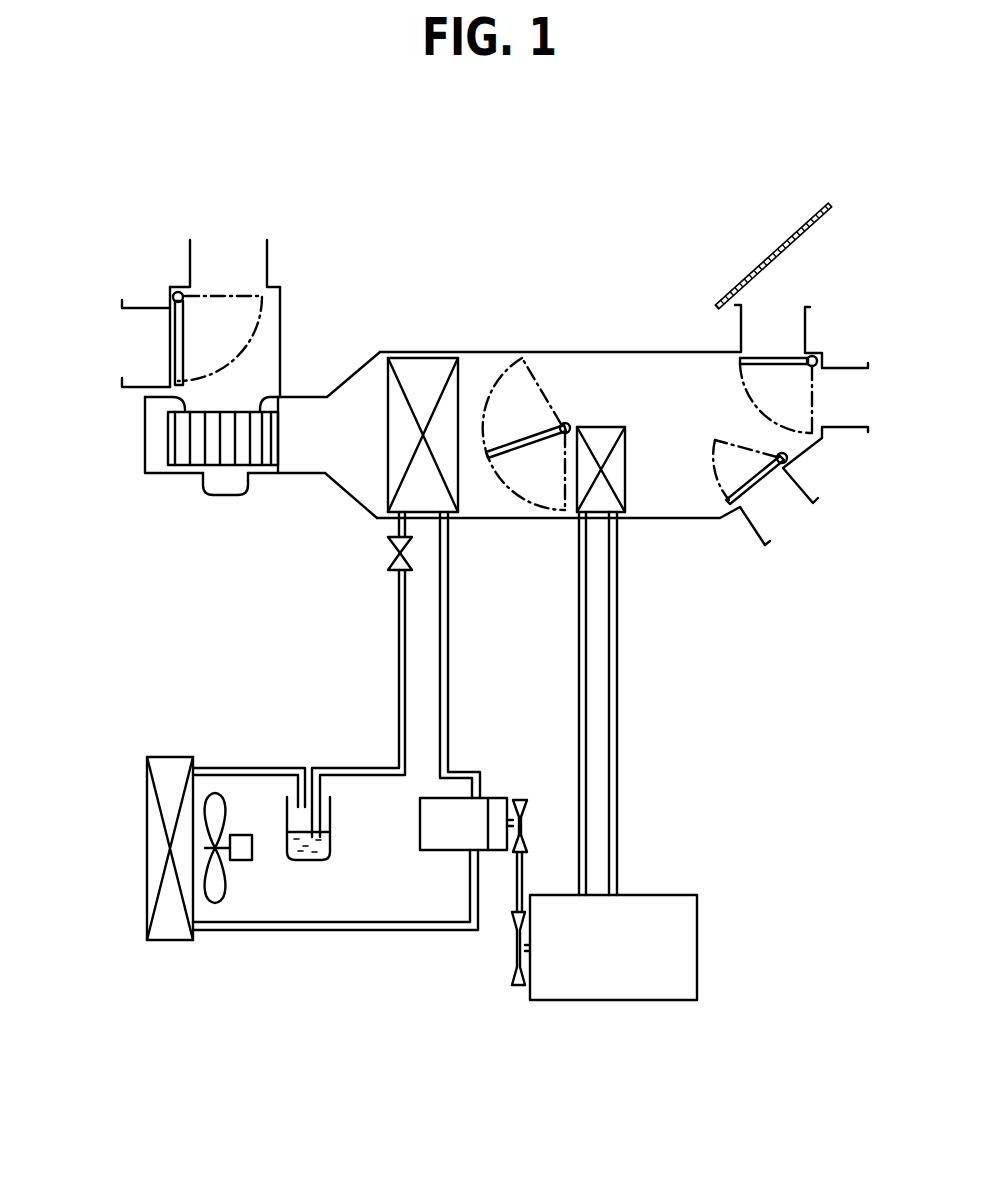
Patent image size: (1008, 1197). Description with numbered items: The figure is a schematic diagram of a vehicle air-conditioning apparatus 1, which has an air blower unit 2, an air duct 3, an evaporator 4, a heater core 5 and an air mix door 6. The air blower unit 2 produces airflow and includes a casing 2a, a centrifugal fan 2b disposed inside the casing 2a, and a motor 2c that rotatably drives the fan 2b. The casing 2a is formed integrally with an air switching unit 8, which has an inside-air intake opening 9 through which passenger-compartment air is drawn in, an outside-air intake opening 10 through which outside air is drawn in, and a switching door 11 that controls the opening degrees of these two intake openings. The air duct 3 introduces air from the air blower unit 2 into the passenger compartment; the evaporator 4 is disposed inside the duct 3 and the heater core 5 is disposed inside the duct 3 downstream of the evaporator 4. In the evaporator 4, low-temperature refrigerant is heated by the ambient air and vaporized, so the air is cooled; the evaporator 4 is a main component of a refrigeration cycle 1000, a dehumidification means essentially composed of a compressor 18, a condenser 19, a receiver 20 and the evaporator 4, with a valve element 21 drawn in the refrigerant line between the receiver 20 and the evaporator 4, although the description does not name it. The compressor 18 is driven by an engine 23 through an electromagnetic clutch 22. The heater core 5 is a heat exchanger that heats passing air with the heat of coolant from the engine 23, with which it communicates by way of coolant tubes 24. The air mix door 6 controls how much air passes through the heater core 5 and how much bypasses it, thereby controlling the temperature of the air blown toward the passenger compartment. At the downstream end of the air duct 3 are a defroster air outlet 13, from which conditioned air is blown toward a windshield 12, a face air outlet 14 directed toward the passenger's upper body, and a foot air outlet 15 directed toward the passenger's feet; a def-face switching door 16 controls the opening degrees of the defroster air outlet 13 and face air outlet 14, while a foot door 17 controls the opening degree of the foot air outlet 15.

The vehicle air-conditioning apparatus 1 is at (472, 263).
The air blower unit 2 is at (158, 483).
The casing 2a is at (143, 420).
The centrifugal fan 2b is at (170, 450).
The motor 2c is at (227, 490).
The air duct 3 is at (585, 352).
The evaporator 4 is at (425, 370).
The heater core 5 is at (620, 480).
The air mix door 6 is at (520, 455).
The air switching unit 8 is at (282, 315).
The inside-air intake opening 9 is at (132, 328).
The outside-air intake opening 10 is at (242, 243).
The switching door 11 is at (175, 350).
The windshield 12 is at (755, 267).
The defroster air outlet 13 is at (778, 305).
The face air outlet 14 is at (867, 407).
The foot air outlet 15 is at (778, 527).
The def-face switching door 16 is at (775, 358).
The foot door 17 is at (757, 490).
The compressor 18 is at (442, 845).
The condenser 19 is at (167, 937).
The receiver 20 is at (308, 858).
The expansion valve 21 is at (393, 572).
The electromagnetic clutch 22 is at (498, 807).
The engine 23 is at (687, 945).
The coolant tubes 24 is at (587, 703).
The refrigeration cycle 1000 is at (310, 958).